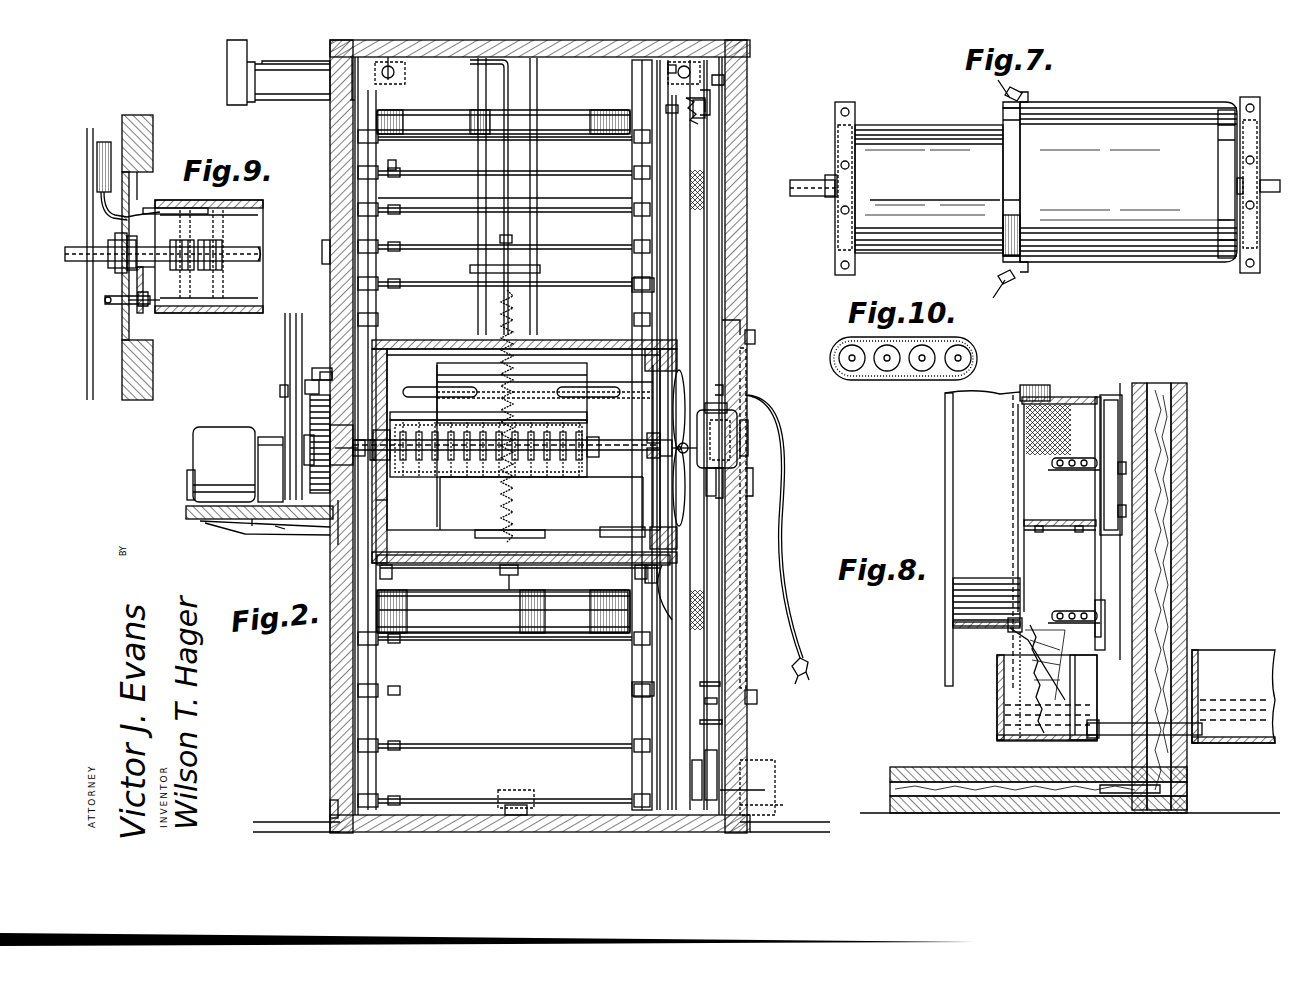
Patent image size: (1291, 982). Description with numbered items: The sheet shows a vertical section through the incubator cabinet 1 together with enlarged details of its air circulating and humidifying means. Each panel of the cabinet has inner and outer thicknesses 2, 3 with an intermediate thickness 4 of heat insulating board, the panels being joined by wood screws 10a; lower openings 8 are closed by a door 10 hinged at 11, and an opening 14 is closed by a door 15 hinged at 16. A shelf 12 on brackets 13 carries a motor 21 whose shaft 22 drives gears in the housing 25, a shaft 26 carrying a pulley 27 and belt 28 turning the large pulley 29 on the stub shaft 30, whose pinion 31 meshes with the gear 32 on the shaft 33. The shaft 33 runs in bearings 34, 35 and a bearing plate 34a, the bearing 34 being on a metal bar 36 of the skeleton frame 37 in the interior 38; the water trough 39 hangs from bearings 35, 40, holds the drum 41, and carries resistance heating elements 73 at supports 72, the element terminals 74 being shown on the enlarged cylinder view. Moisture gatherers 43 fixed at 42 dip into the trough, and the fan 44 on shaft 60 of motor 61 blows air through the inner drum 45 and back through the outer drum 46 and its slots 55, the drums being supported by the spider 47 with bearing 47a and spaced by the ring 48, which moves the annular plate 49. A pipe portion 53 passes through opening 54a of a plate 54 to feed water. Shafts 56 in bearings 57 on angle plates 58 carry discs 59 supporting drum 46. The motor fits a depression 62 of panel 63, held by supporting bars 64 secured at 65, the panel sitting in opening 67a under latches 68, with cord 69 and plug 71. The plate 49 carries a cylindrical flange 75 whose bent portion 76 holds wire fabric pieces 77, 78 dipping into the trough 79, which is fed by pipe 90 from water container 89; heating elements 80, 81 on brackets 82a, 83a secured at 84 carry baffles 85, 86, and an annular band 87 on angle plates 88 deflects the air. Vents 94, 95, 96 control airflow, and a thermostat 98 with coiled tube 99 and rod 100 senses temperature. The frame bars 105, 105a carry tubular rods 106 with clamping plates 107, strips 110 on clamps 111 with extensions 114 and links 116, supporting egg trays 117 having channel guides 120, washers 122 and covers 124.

In FIG. 2, the incubator cabinet 1 is at (745, 126).
In FIG. 8, the incubator cabinet 1 is at (1150, 512).
In FIG. 2, the inner thickness 2 is at (740, 148).
In FIG. 8, the inner thickness 2 is at (1158, 530).
In FIG. 2, the outer thickness 3 is at (735, 168).
In FIG. 8, the outer thickness 3 is at (1180, 565).
In FIG. 2, the intermediate thickness 4 is at (730, 188).
In FIG. 8, the intermediate thickness 4 is at (1167, 545).
In FIG. 2, the openings 8 is at (330, 760).
In FIG. 2, the door 10 is at (330, 717).
In FIG. 2, the wood screws 10a is at (330, 50).
In FIG. 8, the wood screws 10a is at (1160, 790).
In FIG. 2, the hinge 11 is at (330, 811).
In FIG. 2, the shelf 12 is at (186, 512).
In FIG. 2, the brackets 13 is at (205, 523).
In FIG. 2, the opening 14 is at (355, 112).
In FIG. 2, the door 15 is at (330, 182).
In FIG. 2, the hinge 16 is at (322, 250).
In FIG. 2, the motor 21 is at (192, 483).
In FIG. 2, the shaft 22 is at (245, 460).
In FIG. 2, the housing 25 is at (258, 440).
In FIG. 2, the shaft 26 is at (280, 519).
In FIG. 2, the pulley 27 is at (305, 526).
In FIG. 2, the belt 28 is at (292, 315).
In FIG. 2, the large pulley 29 is at (285, 350).
In FIG. 2, the stub shaft 30 is at (280, 390).
In FIG. 2, the pinion 31 is at (313, 380).
In FIG. 2, the gear 32 is at (305, 425).
In FIG. 2, the shaft 33 is at (335, 520).
In FIG. 9, the shaft 33 is at (68, 247).
In FIG. 7, the shaft 33 is at (820, 180).
In FIG. 2, the bearing 34 is at (347, 443).
In FIG. 9, the bearing 34 is at (100, 262).
In FIG. 2, the bearing plate 34a is at (326, 372).
In FIG. 2, the bearing 35 is at (382, 432).
In FIG. 9, the bearing 35 is at (133, 246).
In FIG. 7, the bearing 35 is at (830, 197).
In FIG. 9, the metal bar 36 is at (93, 330).
In FIG. 2, the skeleton frame 37 is at (338, 560).
In FIG. 9, the skeleton frame 37 is at (87, 378).
In FIG. 2, the interior 38 is at (662, 228).
In FIG. 2, the water trough 39 is at (560, 478).
In FIG. 9, the water trough 39 is at (258, 250).
In FIG. 7, the water trough 39 is at (928, 125).
In FIG. 2, the bearing 40 is at (598, 455).
In FIG. 7, the bearing 40 is at (1222, 176).
In FIG. 2, the drum 41 is at (595, 460).
In FIG. 9, the drum 41 is at (215, 272).
In FIG. 7, the drum 41 is at (928, 218).
In FIG. 2, the fixing point 42 is at (468, 470).
In FIG. 9, the fixing point 42 is at (186, 272).
In FIG. 2, the moisture gatherers 43 is at (540, 412).
In FIG. 9, the moisture gatherers 43 is at (215, 215).
In FIG. 2, the fan 44 is at (672, 495).
In FIG. 2, the inner drum 45 is at (595, 530).
In FIG. 2, the outer drum 46 is at (638, 531).
In FIG. 9, the outer drum 46 is at (125, 400).
In FIG. 2, the spider 47 is at (640, 370).
In FIG. 2, the bearing 47a is at (647, 436).
In FIG. 2, the ring 48 is at (650, 350).
In FIG. 2, the annular plate 49 is at (670, 270).
In FIG. 8, the annular plate 49 is at (945, 458).
In FIG. 2, the pipe portion 53 is at (385, 500).
In FIG. 9, the pipe portion 53 is at (112, 304).
In FIG. 2, the plate 54 is at (437, 390).
In FIG. 9, the plate 54 is at (140, 304).
In FIG. 9, the opening 54a is at (145, 306).
In FIG. 2, the elongated slots 55 is at (573, 348).
In FIG. 2, the shafts 56 is at (520, 570).
In FIG. 2, the bearings 57 is at (390, 560).
In FIG. 2, the angle plates 58 is at (672, 615).
In FIG. 2, the discs 59 is at (390, 576).
In FIG. 2, the shaft 60 is at (672, 440).
In FIG. 2, the motor 61 is at (740, 425).
In FIG. 2, the depression 62 is at (750, 450).
In FIG. 2, the panel 63 is at (747, 540).
In FIG. 2, the supporting bars 64 is at (708, 495).
In FIG. 2, the securing point 65 is at (725, 390).
In FIG. 2, the opening 67a is at (740, 318).
In FIG. 2, the latches 68 is at (755, 335).
In FIG. 2, the cord 69 is at (782, 508).
In FIG. 2, the plug 71 is at (808, 665).
In FIG. 7, the supports 72 is at (1003, 108).
In FIG. 7, the resistance heating elements 73 is at (1113, 102).
In FIG. 10, the resistance heating elements 73 is at (915, 380).
In FIG. 9, the terminal 74 is at (150, 212).
In FIG. 7, the terminal 74 is at (1000, 86).
In FIG. 2, the cylindrical flange 75 is at (674, 120).
In FIG. 8, the cylindrical flange 75 is at (978, 576).
In FIG. 8, the bent portion 76 is at (1015, 640).
In FIG. 2, the wire fabric pieces 77 is at (684, 100).
In FIG. 8, the wire fabric pieces 77 is at (1012, 690).
In FIG. 2, the wire fabric pieces 78 is at (712, 100).
In FIG. 8, the wire fabric pieces 78 is at (1078, 680).
In FIG. 2, the water trough 79 is at (775, 785).
In FIG. 8, the water trough 79 is at (1000, 725).
In FIG. 2, the resistance heating element 80 is at (720, 760).
In FIG. 8, the resistance heating element 80 is at (1062, 611).
In FIG. 2, the resistance heating element 81 is at (705, 702).
In FIG. 8, the resistance heating element 81 is at (1074, 458).
In FIG. 8, the bracket 82a is at (1113, 625).
In FIG. 8, the bracket 83a is at (1101, 425).
In FIG. 8, the securing points 84 is at (1115, 395).
In FIG. 2, the baffle 85 is at (700, 722).
In FIG. 8, the baffle 85 is at (1024, 523).
In FIG. 2, the baffle 86 is at (700, 684).
In FIG. 8, the baffle 86 is at (1080, 397).
In FIG. 2, the annular band 87 is at (728, 82).
In FIG. 2, the angle plates 88 is at (705, 68).
In FIG. 2, the water container 89 is at (786, 805).
In FIG. 8, the water container 89 is at (1230, 735).
In FIG. 2, the pipe 90 is at (740, 812).
In FIG. 8, the pipe 90 is at (1115, 735).
In FIG. 2, the slide controlled vents 94 is at (515, 790).
In FIG. 2, the slide controlled air vents 95 is at (752, 495).
In FIG. 2, the slide controlled vents 96 is at (394, 74).
In FIG. 2, the thermostat 98 is at (515, 300).
In FIG. 2, the helically coiled tube 99 is at (492, 310).
In FIG. 2, the rod 100 is at (512, 95).
In FIG. 2, the intermediate vertical bars 105 is at (355, 140).
In FIG. 2, the horizontal longitudinal bars 105a is at (358, 150).
In FIG. 2, the tubular rods 106 is at (400, 172).
In FIG. 2, the clamping plates 107 is at (632, 220).
In FIG. 2, the strips 110 is at (392, 242).
In FIG. 2, the clamps 111 is at (395, 280).
In FIG. 2, the extension 114 is at (392, 205).
In FIG. 2, the links 116 is at (392, 176).
In FIG. 2, the egg trays 117 is at (565, 120).
In FIG. 2, the channel guide 120 is at (590, 140).
In FIG. 2, the washers 122 is at (632, 292).
In FIG. 2, the covers 124 is at (490, 605).